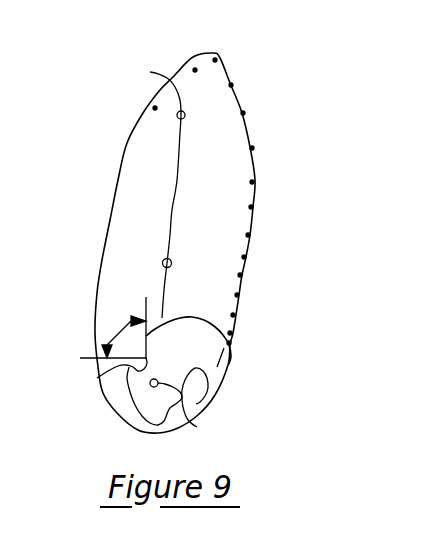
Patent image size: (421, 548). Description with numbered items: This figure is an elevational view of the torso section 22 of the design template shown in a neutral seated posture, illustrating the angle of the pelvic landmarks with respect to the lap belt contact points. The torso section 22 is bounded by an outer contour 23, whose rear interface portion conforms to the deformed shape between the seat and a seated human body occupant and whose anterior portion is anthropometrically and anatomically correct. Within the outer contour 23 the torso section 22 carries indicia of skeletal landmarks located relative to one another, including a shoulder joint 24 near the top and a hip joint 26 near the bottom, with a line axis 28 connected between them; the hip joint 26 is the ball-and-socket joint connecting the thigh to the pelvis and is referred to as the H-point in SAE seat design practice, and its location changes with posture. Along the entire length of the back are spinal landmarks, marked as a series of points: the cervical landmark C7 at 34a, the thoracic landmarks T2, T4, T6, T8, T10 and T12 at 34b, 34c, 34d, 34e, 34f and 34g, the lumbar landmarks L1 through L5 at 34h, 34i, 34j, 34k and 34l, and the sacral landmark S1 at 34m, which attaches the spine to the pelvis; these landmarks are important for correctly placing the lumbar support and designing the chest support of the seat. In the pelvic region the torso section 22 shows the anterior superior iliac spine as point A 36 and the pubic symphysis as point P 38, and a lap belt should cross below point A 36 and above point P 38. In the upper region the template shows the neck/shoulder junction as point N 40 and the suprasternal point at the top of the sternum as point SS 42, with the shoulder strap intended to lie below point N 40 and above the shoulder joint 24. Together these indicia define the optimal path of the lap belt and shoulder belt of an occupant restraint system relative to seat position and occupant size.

The torso section 22 is at (147, 167).
The outer contour 23 is at (130, 134).
The shoulder joint 24 is at (150, 72).
The hip joint 26 is at (197, 427).
The line axis 28 is at (171, 210).
The spinal landmark C7 34a is at (215, 60).
The spinal landmark T2 34b is at (231, 85).
The spinal landmark T4 34c is at (243, 113).
The spinal landmark T6 34d is at (252, 148).
The spinal landmark T8 34e is at (252, 182).
The spinal landmark T10 34f is at (251, 207).
The spinal landmark T12 34g is at (248, 235).
The spinal landmark L1 34h is at (244, 257).
The spinal landmark L2 34i is at (240, 275).
The spinal landmark L3 34j is at (237, 295).
The spinal landmark L4 34k is at (233, 315).
The spinal landmark L5 34l is at (230, 333).
The spinal landmark S1 34m is at (229, 343).
The point A 36 is at (146, 336).
The point P 38 is at (97, 378).
The point N 40 is at (195, 70).
The point SS 42 is at (155, 108).